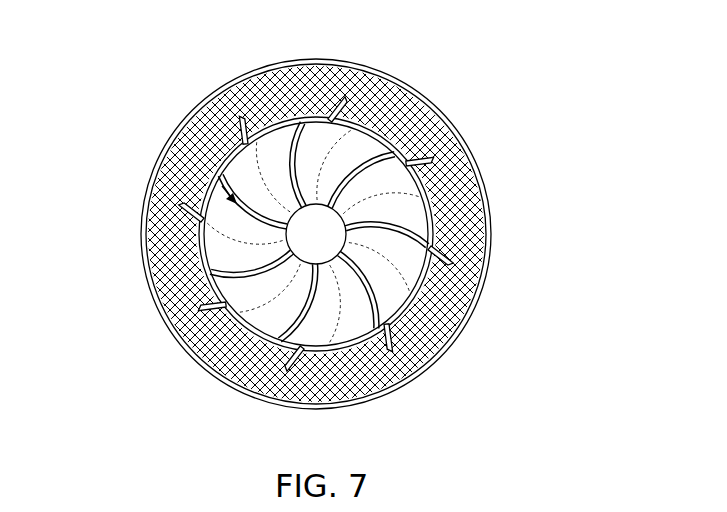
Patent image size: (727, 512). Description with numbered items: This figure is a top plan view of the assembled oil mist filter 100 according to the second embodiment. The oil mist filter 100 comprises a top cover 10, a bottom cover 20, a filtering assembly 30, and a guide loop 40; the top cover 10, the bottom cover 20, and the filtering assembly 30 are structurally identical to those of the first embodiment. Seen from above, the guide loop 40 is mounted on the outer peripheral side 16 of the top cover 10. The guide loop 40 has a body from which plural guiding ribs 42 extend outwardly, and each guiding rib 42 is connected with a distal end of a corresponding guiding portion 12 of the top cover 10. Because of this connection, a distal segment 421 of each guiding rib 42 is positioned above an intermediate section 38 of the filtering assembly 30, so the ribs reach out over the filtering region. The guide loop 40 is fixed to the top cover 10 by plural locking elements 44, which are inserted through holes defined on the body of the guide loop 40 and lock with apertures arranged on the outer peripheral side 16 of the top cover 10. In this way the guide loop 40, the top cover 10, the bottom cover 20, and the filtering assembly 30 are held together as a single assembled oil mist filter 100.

The oil mist filter 100 is at (339, 213).
The bottom cover 20 is at (310, 213).
The top cover 10 is at (276, 209).
The intermediate section 38 is at (491, 215).
The outer peripheral side 16 is at (165, 300).
The filtering assembly 30 is at (276, 209).
The locking elements 44 is at (307, 73).
The guiding portion 12 is at (358, 200).
The guide loop 40 is at (263, 113).
The guiding rib 42 is at (358, 227).
The distal segment 421 is at (434, 160).